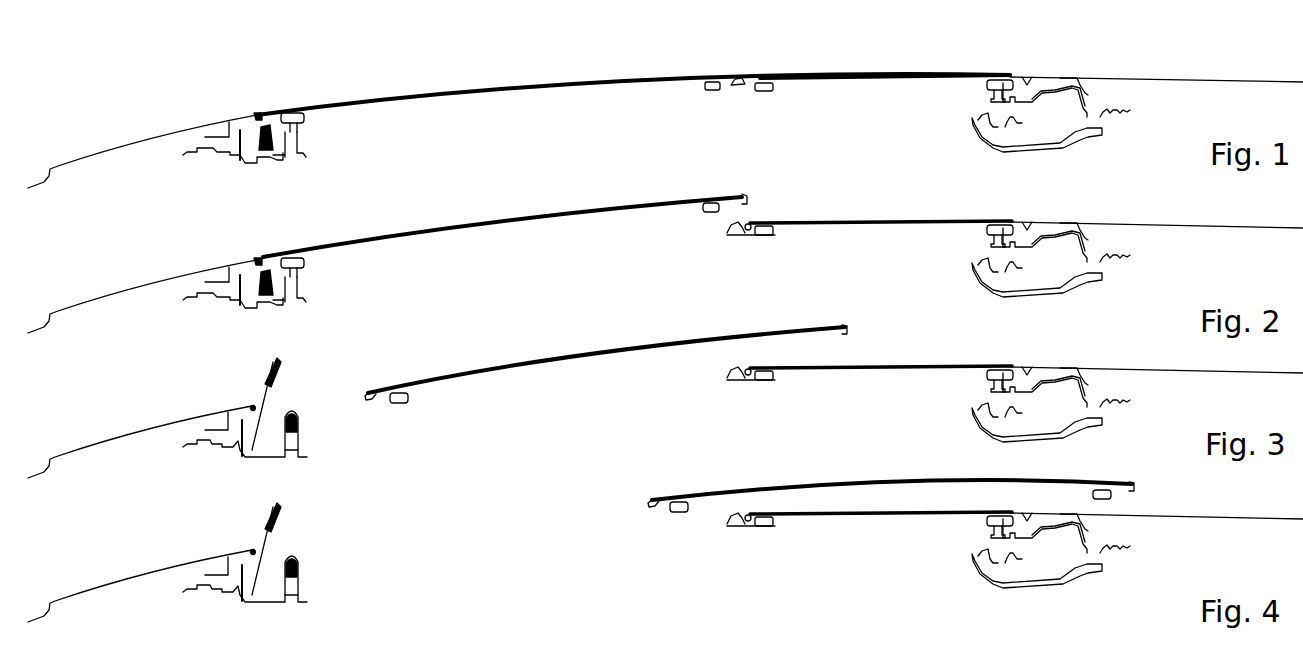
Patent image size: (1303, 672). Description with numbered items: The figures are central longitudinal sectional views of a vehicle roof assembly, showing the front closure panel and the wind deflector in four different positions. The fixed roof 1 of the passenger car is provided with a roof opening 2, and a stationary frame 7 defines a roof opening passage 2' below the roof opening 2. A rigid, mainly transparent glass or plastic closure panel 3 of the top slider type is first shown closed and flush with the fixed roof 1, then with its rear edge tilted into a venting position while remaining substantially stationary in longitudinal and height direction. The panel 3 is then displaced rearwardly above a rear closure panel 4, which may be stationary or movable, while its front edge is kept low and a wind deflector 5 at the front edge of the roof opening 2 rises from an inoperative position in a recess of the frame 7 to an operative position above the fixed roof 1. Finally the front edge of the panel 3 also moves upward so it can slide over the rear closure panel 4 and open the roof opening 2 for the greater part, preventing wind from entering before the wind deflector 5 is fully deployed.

In FIG. 1, the fixed roof 1 is at (125, 147).
In FIG. 2, the fixed roof 1 is at (1128, 220).
In FIG. 3, the fixed roof 1 is at (178, 420).
In FIG. 4, the fixed roof 1 is at (1197, 514).
In FIG. 1, the roof opening 2 is at (279, 129).
In FIG. 2, the roof opening 2 is at (306, 328).
In FIG. 3, the roof opening 2 is at (338, 360).
In FIG. 4, the roof opening 2 is at (383, 506).
In FIG. 3, the roof opening passage 2' is at (326, 470).
In FIG. 4, the roof opening passage 2' is at (331, 629).
In FIG. 1, the closure panel 3 is at (505, 90).
In FIG. 2, the closure panel 3 is at (604, 212).
In FIG. 3, the closure panel 3 is at (652, 346).
In FIG. 4, the closure panel 3 is at (892, 485).
In FIG. 1, the rear closure panel 4 is at (857, 78).
In FIG. 2, the rear closure panel 4 is at (907, 220).
In FIG. 3, the rear closure panel 4 is at (910, 366).
In FIG. 4, the rear closure panel 4 is at (878, 515).
In FIG. 2, the wind deflector 5 is at (273, 292).
In FIG. 3, the wind deflector 5 is at (271, 364).
In FIG. 4, the wind deflector 5 is at (268, 518).
In FIG. 1, the frame 7 is at (255, 167).
In FIG. 2, the frame 7 is at (243, 306).
In FIG. 3, the frame 7 is at (228, 455).
In FIG. 4, the frame 7 is at (253, 602).